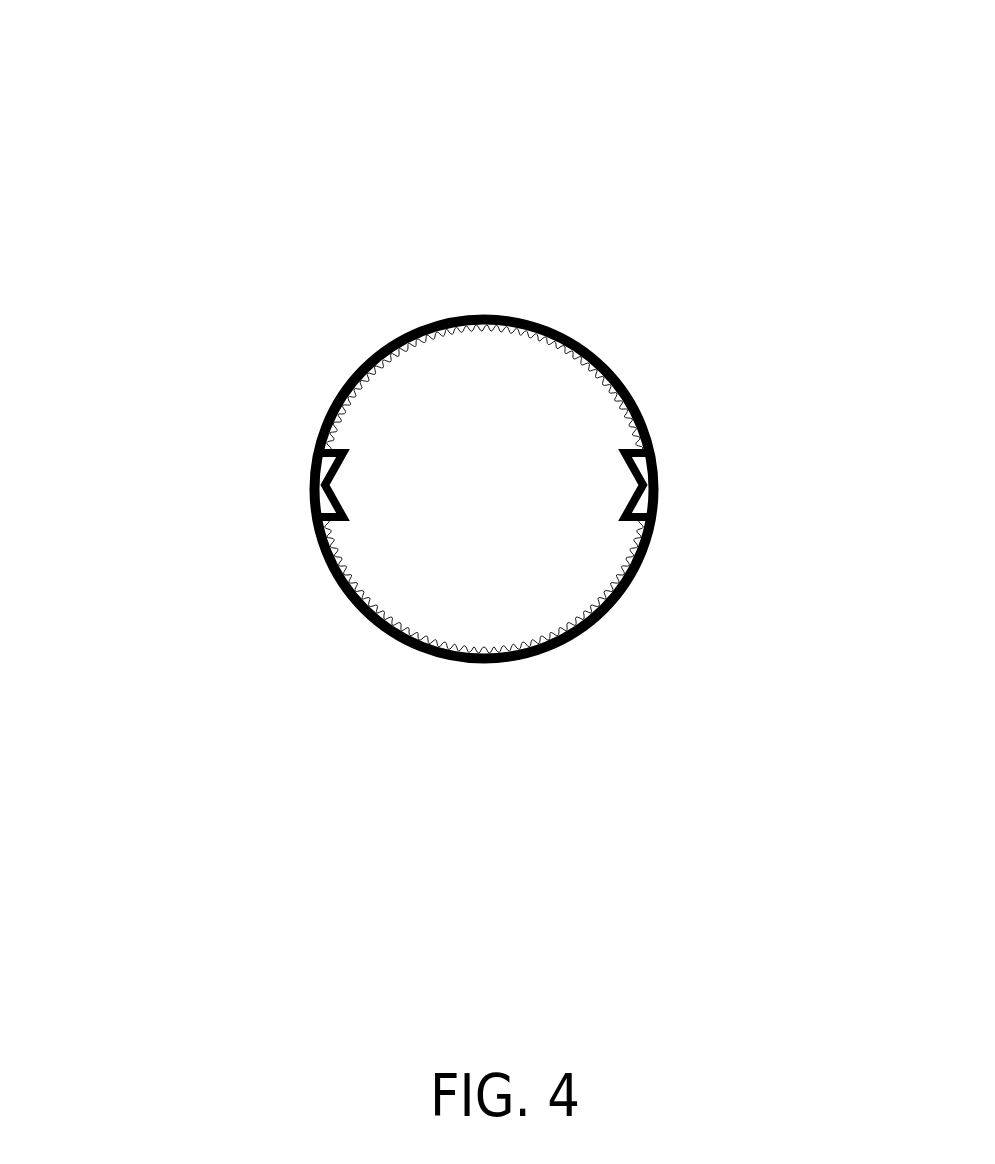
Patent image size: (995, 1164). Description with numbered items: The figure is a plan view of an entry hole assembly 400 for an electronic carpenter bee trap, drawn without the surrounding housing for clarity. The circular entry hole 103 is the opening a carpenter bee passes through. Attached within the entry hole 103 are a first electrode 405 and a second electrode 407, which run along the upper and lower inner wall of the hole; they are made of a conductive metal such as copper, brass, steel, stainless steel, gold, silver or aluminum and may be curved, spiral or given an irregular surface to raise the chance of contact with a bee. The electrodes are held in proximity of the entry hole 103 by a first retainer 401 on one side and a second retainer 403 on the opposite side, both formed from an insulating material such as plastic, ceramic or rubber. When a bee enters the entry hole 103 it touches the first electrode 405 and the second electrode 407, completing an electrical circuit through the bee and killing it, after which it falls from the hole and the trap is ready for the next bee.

The entry hole assembly 400 is at (453, 387).
The entry hole 103 is at (383, 517).
The first retainer 401 is at (174, 409).
The second retainer 403 is at (763, 448).
The first electrode 405 is at (377, 392).
The second electrode 407 is at (592, 590).